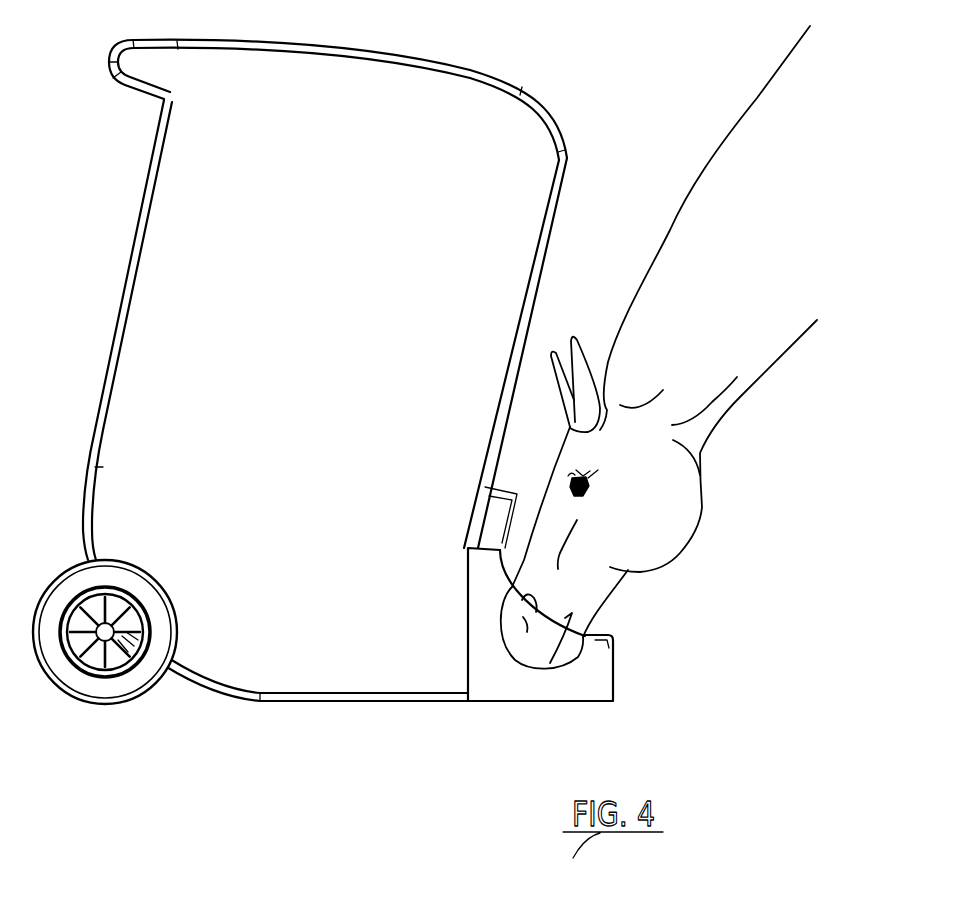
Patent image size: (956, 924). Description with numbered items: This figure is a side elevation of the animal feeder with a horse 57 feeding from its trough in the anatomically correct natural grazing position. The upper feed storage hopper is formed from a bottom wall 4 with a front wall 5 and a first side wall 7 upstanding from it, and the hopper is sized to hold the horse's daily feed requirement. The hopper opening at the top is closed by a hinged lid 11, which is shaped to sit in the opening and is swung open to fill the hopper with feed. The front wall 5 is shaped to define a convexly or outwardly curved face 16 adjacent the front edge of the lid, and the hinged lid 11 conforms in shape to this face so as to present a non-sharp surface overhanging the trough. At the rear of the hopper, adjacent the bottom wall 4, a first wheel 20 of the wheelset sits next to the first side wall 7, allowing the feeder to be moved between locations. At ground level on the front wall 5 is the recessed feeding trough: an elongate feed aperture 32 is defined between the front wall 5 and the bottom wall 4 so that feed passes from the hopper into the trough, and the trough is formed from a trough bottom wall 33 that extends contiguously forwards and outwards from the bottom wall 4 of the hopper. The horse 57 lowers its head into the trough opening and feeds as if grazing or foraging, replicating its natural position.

The bottom wall 4 is at (313, 703).
The front wall 5 is at (562, 191).
The first side wall 7 is at (137, 388).
The hinged lid 11 is at (420, 58).
The convexly curved face 16 is at (557, 108).
The first wheel 20 is at (108, 688).
The elongate feed aperture 32 is at (463, 640).
The trough bottom wall 33 is at (535, 702).
The horse 57 is at (753, 366).